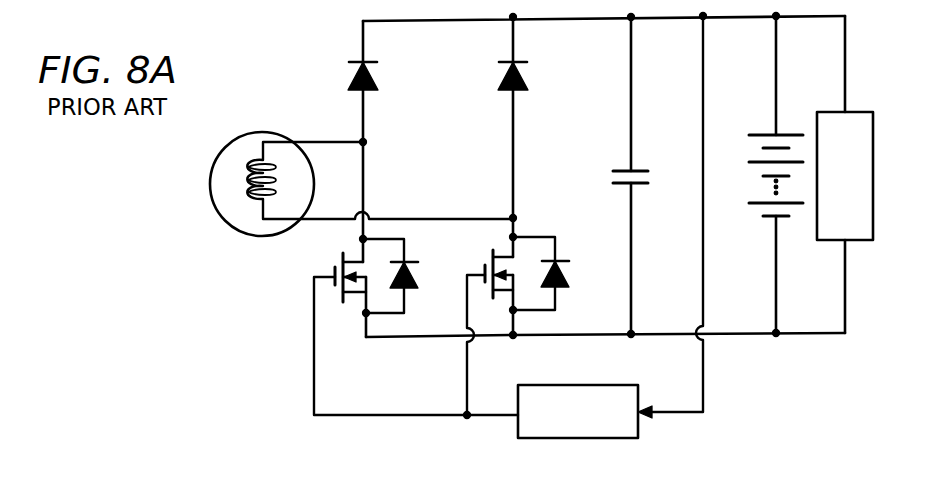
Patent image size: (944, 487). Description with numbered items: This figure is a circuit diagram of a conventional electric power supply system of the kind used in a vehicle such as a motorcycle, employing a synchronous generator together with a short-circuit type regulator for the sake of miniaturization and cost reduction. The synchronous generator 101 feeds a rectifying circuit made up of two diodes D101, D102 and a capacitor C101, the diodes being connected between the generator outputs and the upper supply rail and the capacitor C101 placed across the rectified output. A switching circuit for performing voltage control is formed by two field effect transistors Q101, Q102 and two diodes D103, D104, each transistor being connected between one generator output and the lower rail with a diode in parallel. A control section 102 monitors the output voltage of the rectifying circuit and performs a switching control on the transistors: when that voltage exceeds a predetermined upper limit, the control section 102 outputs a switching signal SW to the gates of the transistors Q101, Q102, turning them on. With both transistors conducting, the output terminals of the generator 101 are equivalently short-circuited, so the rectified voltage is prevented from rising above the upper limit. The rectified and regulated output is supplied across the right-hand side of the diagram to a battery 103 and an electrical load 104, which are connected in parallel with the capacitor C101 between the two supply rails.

The synchronous generator 101 is at (265, 133).
The control section 102 is at (594, 385).
The battery 103 is at (758, 131).
The electrical load 104 is at (830, 110).
The diode D101 is at (390, 83).
The diode D102 is at (539, 118).
The diode D103 is at (411, 276).
The diode D104 is at (564, 275).
The FET (field effect transistor) Q101 is at (400, 278).
The FET (field effect transistor) Q102 is at (477, 318).
The capacitor C101 is at (601, 176).
The switching signal SW is at (467, 435).